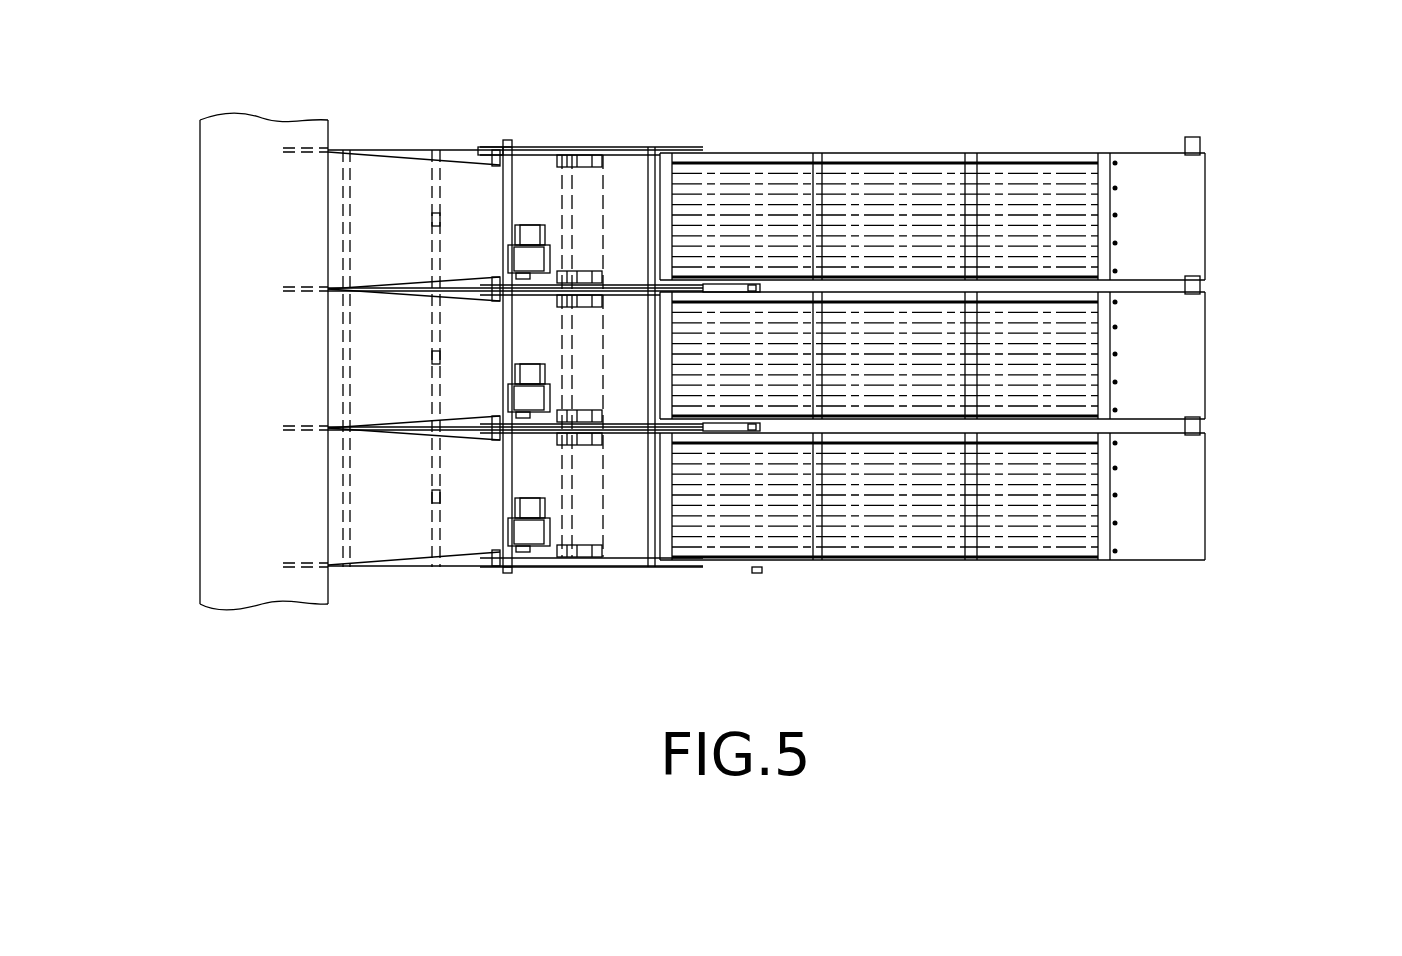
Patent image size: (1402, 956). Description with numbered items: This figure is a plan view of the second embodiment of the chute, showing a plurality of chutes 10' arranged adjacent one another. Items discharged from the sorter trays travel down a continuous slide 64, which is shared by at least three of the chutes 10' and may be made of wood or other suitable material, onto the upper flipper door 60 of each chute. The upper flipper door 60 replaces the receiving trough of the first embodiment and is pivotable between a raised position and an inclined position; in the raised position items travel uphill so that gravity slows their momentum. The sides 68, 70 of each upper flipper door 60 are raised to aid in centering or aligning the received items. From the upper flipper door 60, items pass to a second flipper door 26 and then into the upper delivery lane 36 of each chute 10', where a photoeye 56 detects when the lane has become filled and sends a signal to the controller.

The chute 10' is at (1014, 285).
The flipper door 26 is at (607, 162).
The upper delivery lane 36 is at (906, 183).
The photoeye 56 is at (757, 574).
The upper flipper door 60 is at (376, 172).
The slide 64 is at (192, 456).
The side 68 is at (480, 152).
The side 70 is at (473, 284).